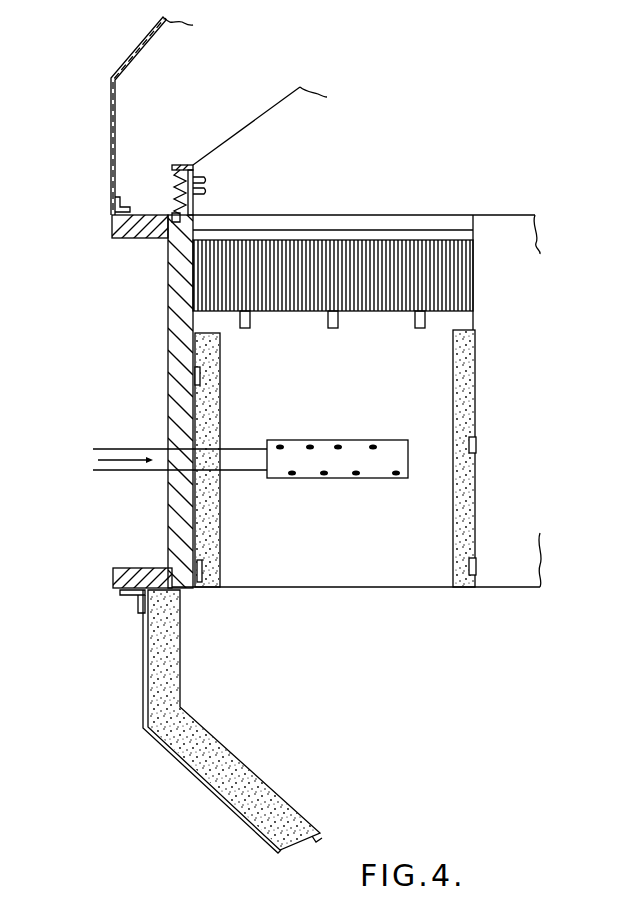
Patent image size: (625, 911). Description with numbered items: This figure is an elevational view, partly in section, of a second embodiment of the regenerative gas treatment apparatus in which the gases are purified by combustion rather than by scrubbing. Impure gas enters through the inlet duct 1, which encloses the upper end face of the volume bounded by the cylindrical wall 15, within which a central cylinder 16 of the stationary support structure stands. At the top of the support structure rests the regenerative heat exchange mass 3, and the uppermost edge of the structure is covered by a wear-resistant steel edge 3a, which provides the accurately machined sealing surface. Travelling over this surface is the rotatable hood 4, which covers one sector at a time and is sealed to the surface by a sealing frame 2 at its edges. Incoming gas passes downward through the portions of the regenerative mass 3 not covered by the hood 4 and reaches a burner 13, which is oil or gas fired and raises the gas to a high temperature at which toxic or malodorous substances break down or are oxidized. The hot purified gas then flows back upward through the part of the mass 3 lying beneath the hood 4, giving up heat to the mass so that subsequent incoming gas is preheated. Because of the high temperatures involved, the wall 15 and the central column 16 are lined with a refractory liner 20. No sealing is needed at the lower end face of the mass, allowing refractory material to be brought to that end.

The inlet duct 1 is at (136, 44).
The sealing frame 2 is at (172, 212).
The regenerative heat exchange mass 3 is at (457, 278).
The metal edge 3a is at (315, 218).
The rotatable hood 4 is at (313, 138).
The burner 13 is at (322, 448).
The cylindrical wall 15 is at (168, 403).
The central cylinder 16 is at (518, 421).
The refractory liner 20 is at (222, 548).